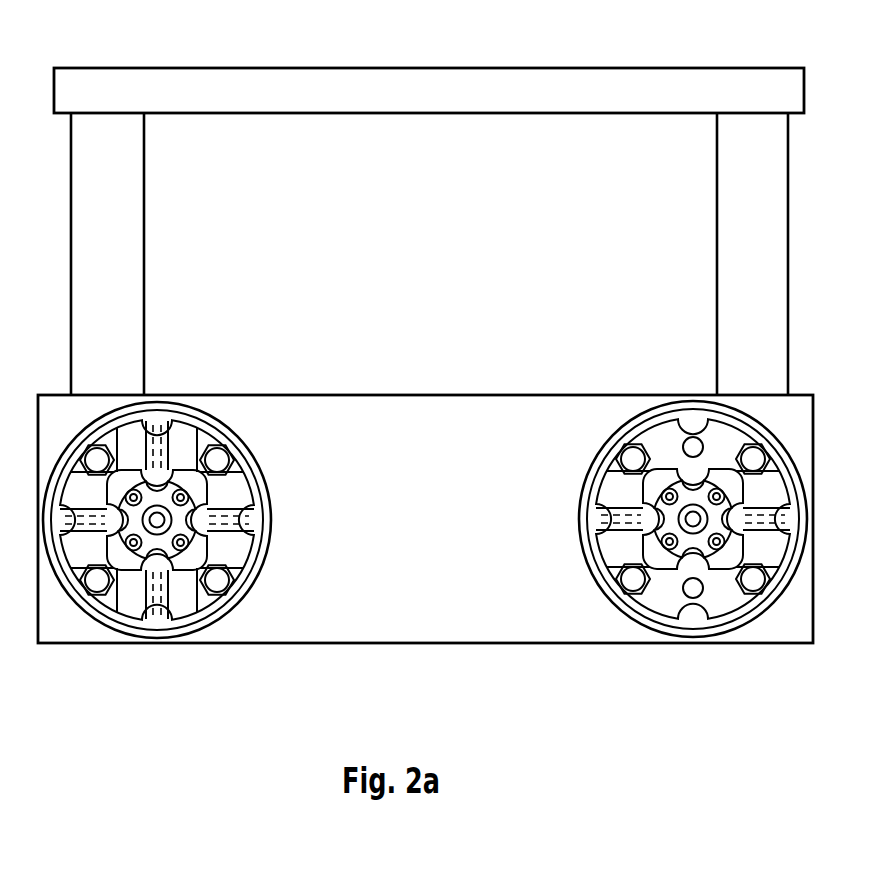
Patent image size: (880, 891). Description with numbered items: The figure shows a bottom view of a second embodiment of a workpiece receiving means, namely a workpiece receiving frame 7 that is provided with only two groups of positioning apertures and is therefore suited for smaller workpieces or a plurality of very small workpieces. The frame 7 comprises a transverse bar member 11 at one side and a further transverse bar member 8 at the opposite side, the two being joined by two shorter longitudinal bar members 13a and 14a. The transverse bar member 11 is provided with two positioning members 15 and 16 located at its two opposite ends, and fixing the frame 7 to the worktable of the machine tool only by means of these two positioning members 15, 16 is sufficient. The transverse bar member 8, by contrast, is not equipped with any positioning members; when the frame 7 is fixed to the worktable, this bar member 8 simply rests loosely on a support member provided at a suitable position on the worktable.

The workpiece receiving frame 7 is at (433, 343).
The transverse bar member 8 is at (466, 78).
The transverse bar member 11 is at (505, 406).
The longitudinal bar member 13a is at (127, 281).
The longitudinal bar member 14a is at (731, 248).
The positioning member 15 is at (272, 521).
The positioning member 16 is at (579, 521).